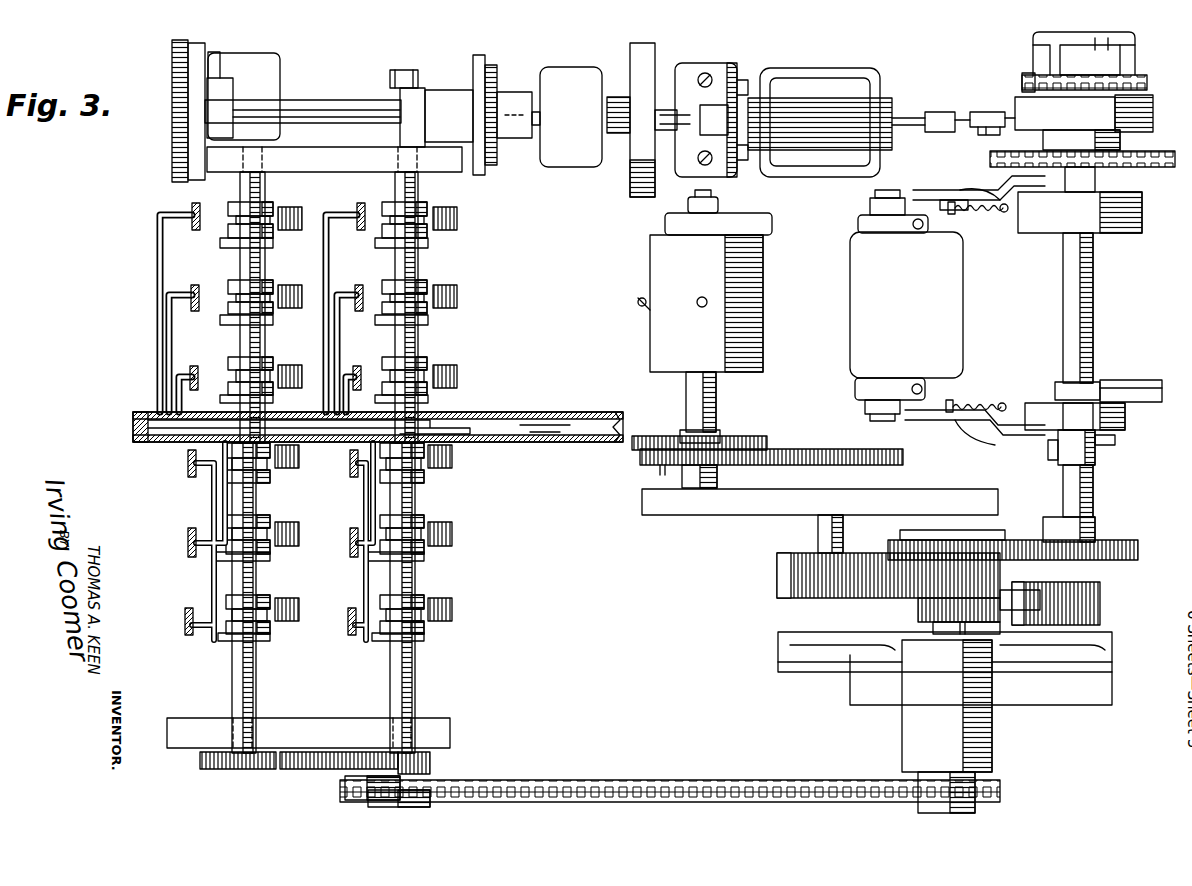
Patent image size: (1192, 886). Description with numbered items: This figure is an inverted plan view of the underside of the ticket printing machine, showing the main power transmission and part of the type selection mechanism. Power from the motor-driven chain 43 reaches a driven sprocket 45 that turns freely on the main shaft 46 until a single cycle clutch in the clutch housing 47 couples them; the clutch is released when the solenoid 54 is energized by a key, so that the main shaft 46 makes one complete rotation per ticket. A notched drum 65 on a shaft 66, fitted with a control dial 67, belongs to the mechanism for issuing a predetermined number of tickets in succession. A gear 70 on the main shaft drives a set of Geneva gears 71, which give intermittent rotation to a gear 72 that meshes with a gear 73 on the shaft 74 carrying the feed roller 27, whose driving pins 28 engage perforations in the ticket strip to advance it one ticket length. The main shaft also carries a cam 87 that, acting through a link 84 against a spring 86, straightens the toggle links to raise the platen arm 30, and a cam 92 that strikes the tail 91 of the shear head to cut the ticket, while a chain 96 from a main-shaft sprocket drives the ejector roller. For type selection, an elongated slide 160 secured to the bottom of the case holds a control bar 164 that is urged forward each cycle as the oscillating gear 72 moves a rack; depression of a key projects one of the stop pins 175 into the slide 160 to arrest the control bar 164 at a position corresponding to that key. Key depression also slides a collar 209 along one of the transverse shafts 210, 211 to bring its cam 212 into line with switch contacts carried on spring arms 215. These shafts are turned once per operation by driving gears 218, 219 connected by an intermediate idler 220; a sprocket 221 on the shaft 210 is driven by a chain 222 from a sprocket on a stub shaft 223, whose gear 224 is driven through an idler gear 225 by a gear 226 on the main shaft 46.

The feed roller 27 is at (652, 268).
The driving pins 28 is at (638, 306).
The arm 30 is at (862, 298).
The chain 43 is at (1025, 82).
The driven sprocket 45 is at (1050, 70).
The main shaft 46 is at (1085, 276).
The clutch housing 47 is at (1018, 108).
The solenoid 54 is at (822, 76).
The notched drum 65 is at (642, 48).
The shaft 66 is at (348, 90).
The control dial 67 is at (172, 58).
The gear 70 is at (1108, 545).
The Geneva gears 71 is at (770, 578).
The gear 72 is at (826, 455).
The gear 73 is at (645, 466).
The shaft 74 is at (712, 398).
The link 84 is at (1015, 452).
The spring 86 is at (975, 404).
The cam 87 is at (1057, 460).
The tail 91 is at (1155, 366).
The cam 92 is at (1058, 386).
The chain 96 is at (1000, 152).
The slide 160 is at (500, 444).
The control bar 164 is at (583, 426).
The stop pins 175 is at (157, 272).
The collar 209 is at (268, 204).
The shaft 210 is at (420, 262).
The shaft 211 is at (258, 262).
The cam 212 is at (228, 248).
The spring arms 215 is at (458, 296).
The driving gear 218 is at (440, 762).
The driving gear 219 is at (235, 770).
The intermediate idler 220 is at (308, 770).
The sprocket 221 is at (412, 800).
The chain 222 is at (632, 780).
The stub shaft 223 is at (935, 625).
The gear 224 is at (918, 607).
The idler gear 225 is at (1036, 605).
The gear 226 is at (1092, 600).